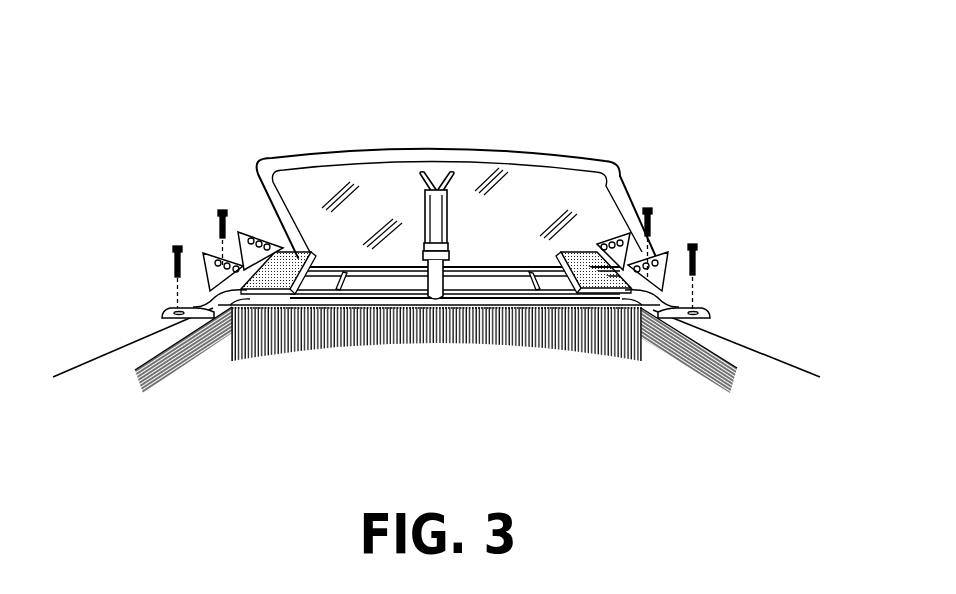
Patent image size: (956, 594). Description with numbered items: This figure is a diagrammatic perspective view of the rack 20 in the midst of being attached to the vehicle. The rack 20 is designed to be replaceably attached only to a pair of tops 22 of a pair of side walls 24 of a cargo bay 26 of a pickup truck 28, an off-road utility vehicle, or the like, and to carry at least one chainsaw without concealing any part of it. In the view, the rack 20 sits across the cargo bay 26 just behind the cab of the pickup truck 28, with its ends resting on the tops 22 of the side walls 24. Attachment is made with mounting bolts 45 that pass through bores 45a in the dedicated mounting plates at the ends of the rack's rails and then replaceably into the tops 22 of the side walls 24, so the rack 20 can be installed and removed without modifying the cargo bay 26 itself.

The rack 20 is at (435, 235).
The tops 22 is at (124, 357).
The side walls 24 is at (680, 363).
The cargo bay 26 is at (360, 369).
The pickup truck 28 is at (432, 148).
The mounting bolts 45 is at (177, 244).
The bores 45a is at (188, 306).